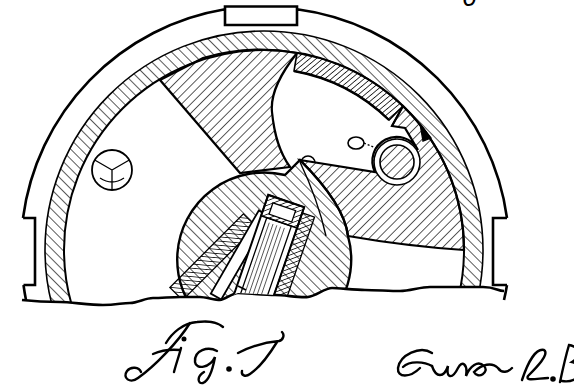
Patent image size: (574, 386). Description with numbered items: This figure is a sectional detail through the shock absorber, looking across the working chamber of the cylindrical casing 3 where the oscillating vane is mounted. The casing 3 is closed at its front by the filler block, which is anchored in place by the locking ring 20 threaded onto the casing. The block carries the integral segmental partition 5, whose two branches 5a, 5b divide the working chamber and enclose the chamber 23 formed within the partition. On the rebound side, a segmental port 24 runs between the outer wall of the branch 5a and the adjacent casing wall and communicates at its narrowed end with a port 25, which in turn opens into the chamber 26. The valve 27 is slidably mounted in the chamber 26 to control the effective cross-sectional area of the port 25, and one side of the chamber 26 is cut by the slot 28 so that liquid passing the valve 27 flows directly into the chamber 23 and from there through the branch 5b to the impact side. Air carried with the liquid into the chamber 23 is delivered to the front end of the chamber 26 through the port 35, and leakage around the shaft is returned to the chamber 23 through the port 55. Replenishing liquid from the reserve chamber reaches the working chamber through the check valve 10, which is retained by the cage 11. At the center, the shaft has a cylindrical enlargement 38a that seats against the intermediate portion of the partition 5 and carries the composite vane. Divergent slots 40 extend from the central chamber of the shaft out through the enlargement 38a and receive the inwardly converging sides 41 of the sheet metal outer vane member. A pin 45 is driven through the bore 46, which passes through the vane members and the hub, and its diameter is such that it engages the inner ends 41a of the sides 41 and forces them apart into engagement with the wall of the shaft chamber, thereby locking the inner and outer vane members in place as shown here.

The cylindrical casing 3 is at (242, 63).
The segmental partition 5 is at (273, 261).
The branch of the partition 5a is at (413, 247).
The branch of the partition 5b is at (230, 130).
The check valve 10 is at (110, 212).
The cage 11 is at (114, 165).
The locking ring 20 is at (80, 98).
The chamber 23 is at (341, 95).
The segmental port 24 is at (452, 183).
The port 25 is at (454, 135).
The chamber 26 is at (413, 147).
The valve 27 is at (434, 153).
The slot 28 is at (380, 145).
The port 35 is at (349, 143).
The cylindrical enlargement 38a is at (311, 290).
The divergent slots 40 is at (208, 263).
The sides 41 is at (172, 292).
The inner ends of the side members 41a is at (240, 233).
The pin 45 is at (237, 287).
The bore 46 is at (220, 288).
The port 55 is at (313, 157).